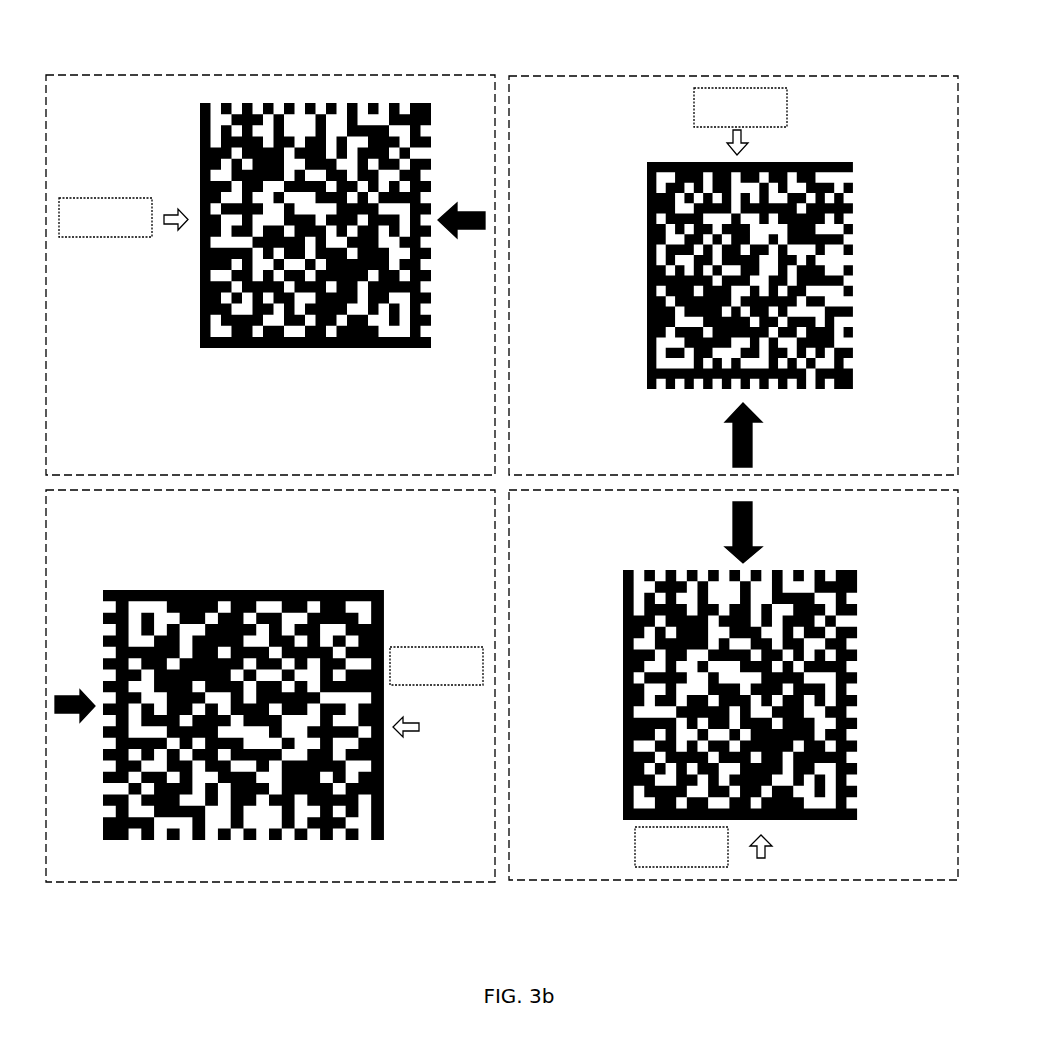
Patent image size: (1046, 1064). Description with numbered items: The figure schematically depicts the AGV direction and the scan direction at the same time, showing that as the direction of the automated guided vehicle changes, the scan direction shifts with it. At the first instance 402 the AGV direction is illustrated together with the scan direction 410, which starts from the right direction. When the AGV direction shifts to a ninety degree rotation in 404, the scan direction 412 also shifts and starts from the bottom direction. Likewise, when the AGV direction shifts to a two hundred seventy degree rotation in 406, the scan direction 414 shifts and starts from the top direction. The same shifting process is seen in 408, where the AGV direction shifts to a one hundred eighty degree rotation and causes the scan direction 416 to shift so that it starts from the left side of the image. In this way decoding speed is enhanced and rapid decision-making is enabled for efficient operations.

The first instance 402 is at (262, 75).
The ninety degree rotation instance 404 is at (772, 77).
The two hundred seventy degree rotation instance 406 is at (830, 882).
The one hundred eighty degree rotation instance 408 is at (270, 884).
The scan direction 410 is at (456, 203).
The scan direction 412 is at (752, 445).
The scan direction 414 is at (752, 545).
The scan direction 416 is at (85, 713).